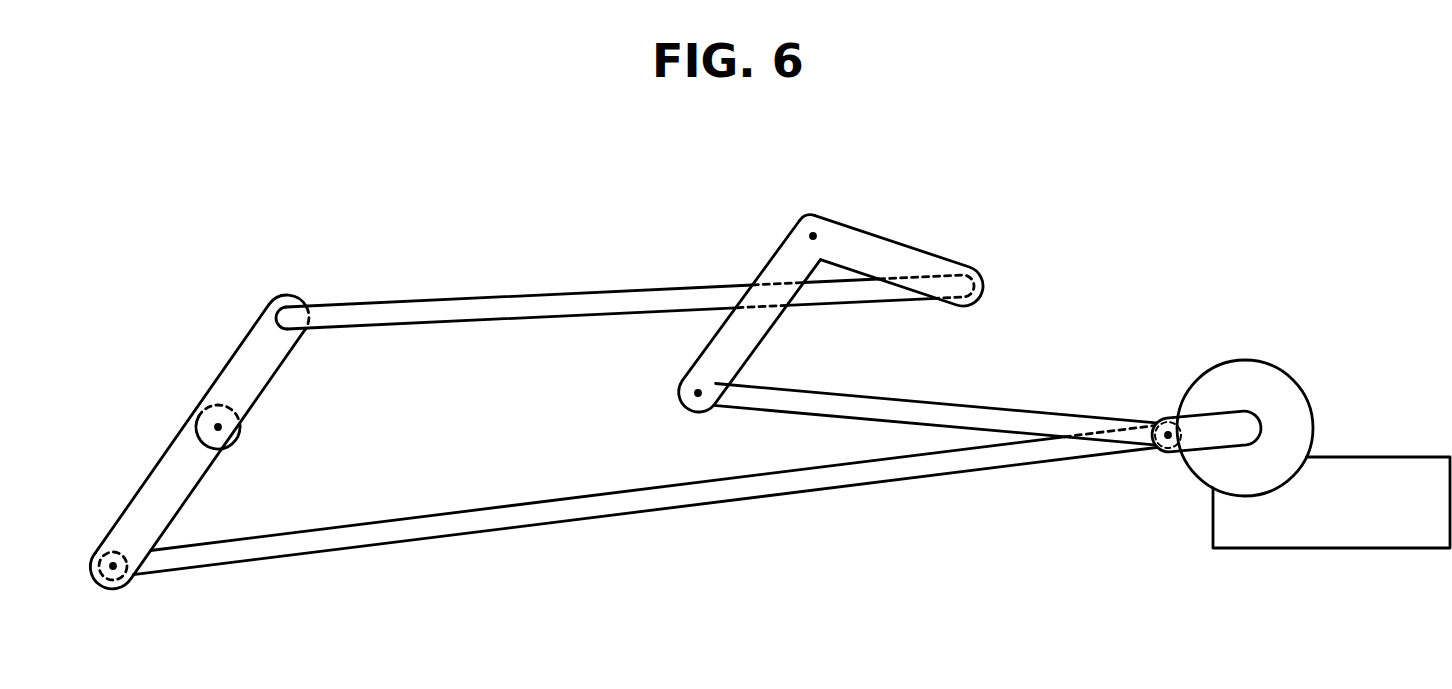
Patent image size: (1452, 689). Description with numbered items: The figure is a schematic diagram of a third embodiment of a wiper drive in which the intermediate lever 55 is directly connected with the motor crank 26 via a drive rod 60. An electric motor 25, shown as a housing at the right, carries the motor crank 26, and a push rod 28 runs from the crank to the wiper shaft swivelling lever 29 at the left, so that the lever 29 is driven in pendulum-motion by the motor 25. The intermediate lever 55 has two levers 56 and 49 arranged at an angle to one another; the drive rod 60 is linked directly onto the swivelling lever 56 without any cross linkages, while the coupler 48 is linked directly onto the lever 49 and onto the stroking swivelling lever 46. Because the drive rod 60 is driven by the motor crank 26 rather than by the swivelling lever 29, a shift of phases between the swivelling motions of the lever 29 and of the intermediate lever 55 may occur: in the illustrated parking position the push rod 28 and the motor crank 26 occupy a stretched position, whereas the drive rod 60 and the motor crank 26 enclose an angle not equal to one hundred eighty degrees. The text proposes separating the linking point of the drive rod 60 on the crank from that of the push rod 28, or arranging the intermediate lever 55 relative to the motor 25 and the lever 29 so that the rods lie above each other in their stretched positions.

The electric motor 25 is at (1392, 470).
The motor crank 26 is at (1232, 418).
The push rod 28 is at (717, 490).
The wiper shaft swivelling lever 29 is at (133, 523).
The stroking swivelling lever 46 is at (248, 358).
The coupler 48 is at (518, 303).
The lever 49 is at (903, 257).
The intermediate lever 55 is at (763, 212).
The swivelling lever 56 is at (748, 340).
The drive rod 60 is at (1037, 415).